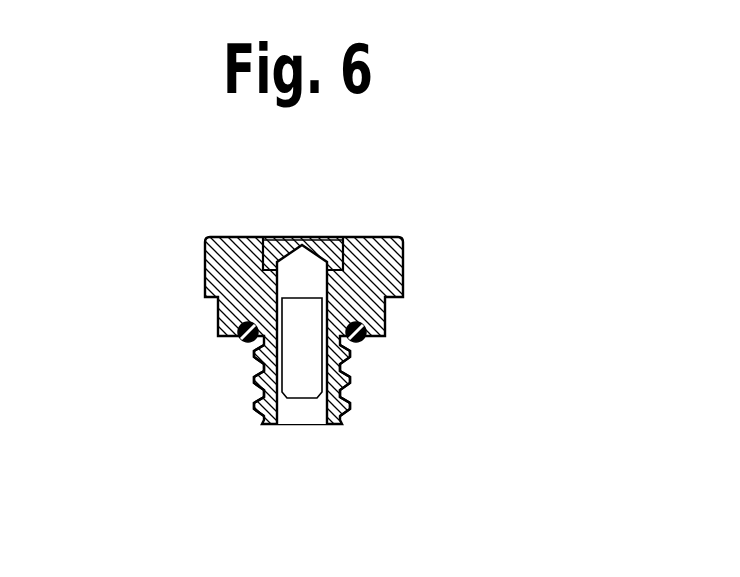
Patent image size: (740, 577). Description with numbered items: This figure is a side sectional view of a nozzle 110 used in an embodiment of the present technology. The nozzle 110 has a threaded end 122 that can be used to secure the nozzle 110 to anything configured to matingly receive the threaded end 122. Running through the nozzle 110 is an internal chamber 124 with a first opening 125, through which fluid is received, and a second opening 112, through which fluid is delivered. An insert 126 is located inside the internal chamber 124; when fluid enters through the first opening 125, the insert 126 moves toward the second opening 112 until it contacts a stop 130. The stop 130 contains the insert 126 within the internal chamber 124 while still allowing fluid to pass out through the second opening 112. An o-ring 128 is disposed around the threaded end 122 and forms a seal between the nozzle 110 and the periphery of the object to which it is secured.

The nozzle 110 is at (422, 230).
The second opening 112 is at (300, 237).
The threaded end 122 is at (352, 383).
The internal chamber 124 is at (317, 285).
The first opening 125 is at (297, 432).
The insert 126 is at (258, 383).
The o-ring 128 is at (243, 342).
The stop 130 is at (277, 237).